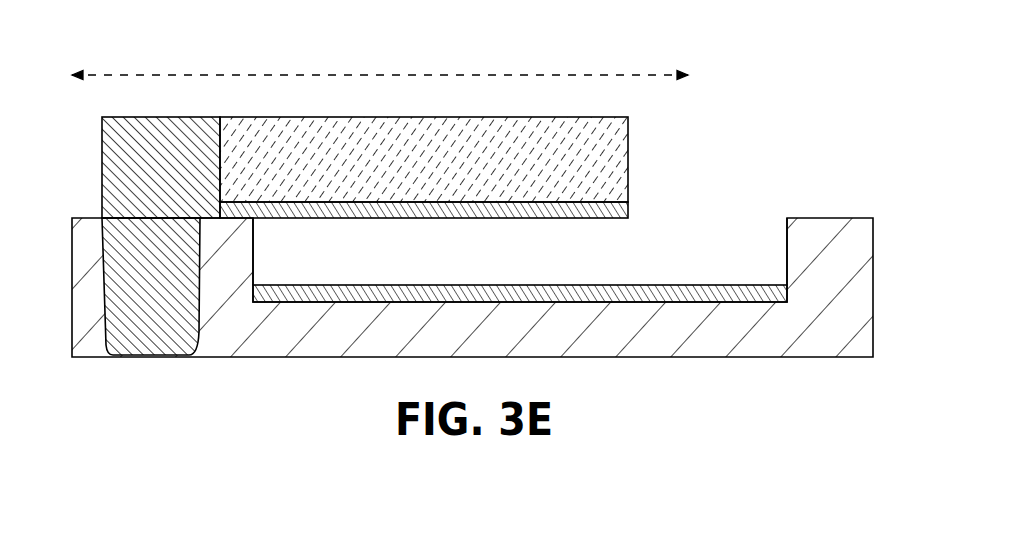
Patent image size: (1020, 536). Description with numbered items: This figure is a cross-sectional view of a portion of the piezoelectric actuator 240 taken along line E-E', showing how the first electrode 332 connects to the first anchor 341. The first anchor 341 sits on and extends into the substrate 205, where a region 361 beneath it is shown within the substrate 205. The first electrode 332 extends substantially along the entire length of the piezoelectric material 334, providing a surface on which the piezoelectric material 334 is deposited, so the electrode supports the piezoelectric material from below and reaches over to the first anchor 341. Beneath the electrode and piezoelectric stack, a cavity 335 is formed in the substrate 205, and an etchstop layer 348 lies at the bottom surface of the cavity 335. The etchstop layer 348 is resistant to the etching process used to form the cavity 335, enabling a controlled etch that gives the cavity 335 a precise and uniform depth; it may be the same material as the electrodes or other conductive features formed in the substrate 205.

The piezoelectric actuator 240 is at (461, 209).
The substrate 205 is at (802, 333).
The doped well region 361 is at (168, 290).
The first anchor 341 is at (168, 166).
The piezoelectric material 334 is at (625, 162).
The first electrode 332 is at (589, 219).
The etchstop layer 348 is at (690, 285).
The cavity 335 is at (739, 206).